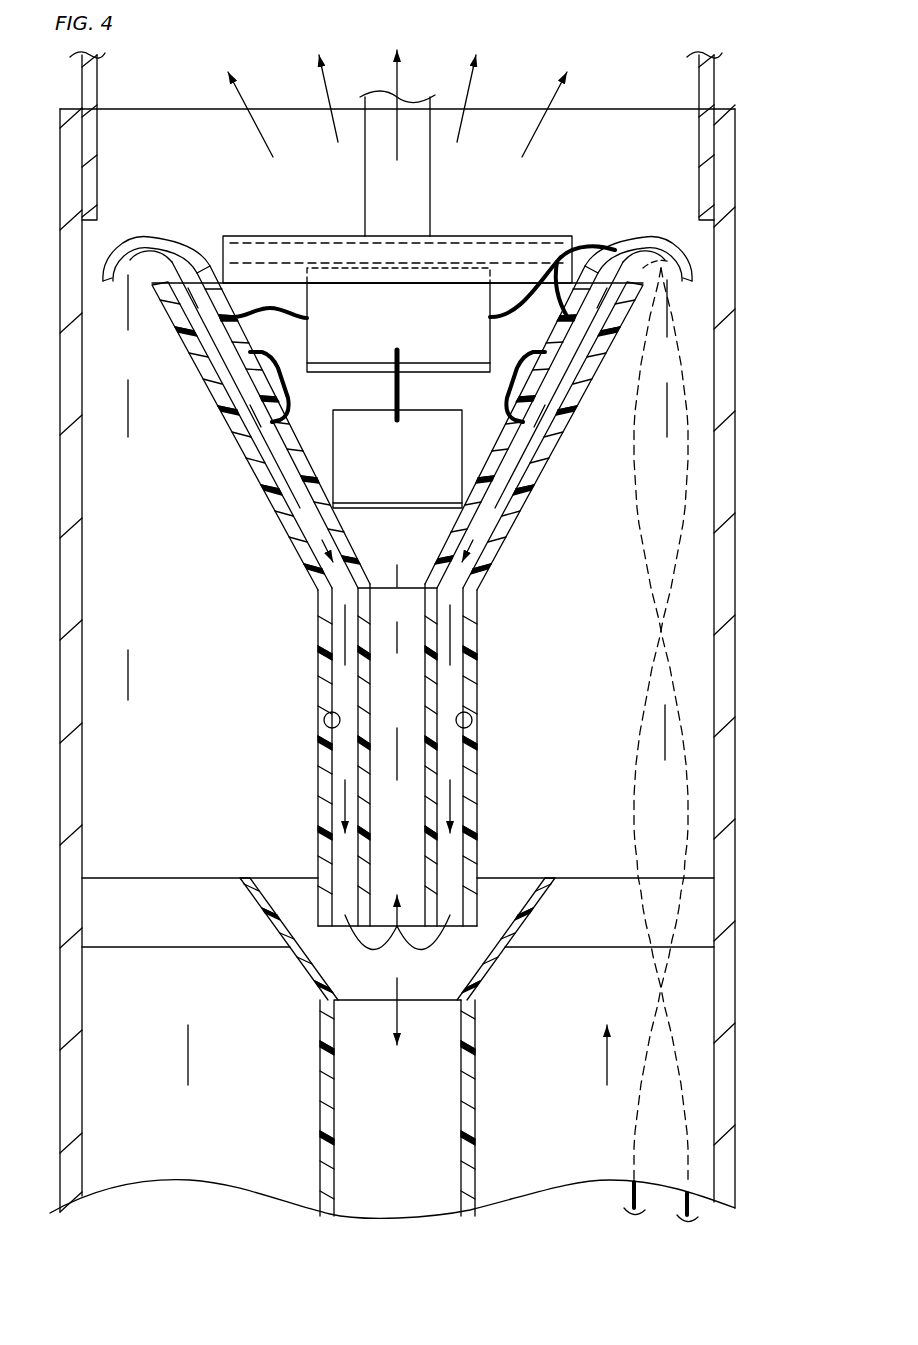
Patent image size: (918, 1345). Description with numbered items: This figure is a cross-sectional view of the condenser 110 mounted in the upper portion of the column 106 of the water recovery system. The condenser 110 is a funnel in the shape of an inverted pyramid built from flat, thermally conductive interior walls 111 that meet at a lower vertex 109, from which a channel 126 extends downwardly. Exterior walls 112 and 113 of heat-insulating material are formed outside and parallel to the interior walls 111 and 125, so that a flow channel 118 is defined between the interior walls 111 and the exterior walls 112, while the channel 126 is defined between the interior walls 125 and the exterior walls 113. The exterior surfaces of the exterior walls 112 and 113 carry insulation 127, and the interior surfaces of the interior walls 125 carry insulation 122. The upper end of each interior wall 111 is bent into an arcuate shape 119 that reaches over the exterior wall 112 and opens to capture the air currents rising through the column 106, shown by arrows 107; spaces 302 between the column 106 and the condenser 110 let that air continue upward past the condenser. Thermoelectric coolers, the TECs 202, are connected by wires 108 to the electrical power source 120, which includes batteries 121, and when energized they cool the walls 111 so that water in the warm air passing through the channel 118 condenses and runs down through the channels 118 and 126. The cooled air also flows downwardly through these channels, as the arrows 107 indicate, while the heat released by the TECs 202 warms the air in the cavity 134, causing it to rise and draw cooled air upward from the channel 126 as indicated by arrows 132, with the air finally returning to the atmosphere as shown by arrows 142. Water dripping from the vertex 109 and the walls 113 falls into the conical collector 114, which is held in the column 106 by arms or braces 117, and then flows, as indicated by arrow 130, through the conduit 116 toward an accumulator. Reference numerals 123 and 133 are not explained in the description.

The column 106 is at (733, 672).
The arrows (air flow) 107 is at (128, 428).
The wires 108 is at (632, 1193).
The vertex 109 is at (315, 585).
The condenser 110 is at (250, 512).
The interior walls 111 is at (303, 457).
The exterior walls 112 is at (272, 473).
The exterior walls 113 is at (338, 718).
The collector 114 is at (293, 893).
The conduit 116 is at (325, 1165).
The arms or braces 117 is at (170, 928).
The flow channel 118 is at (530, 445).
The arcuate shape (arcuate bend) 119 is at (146, 238).
The electrical power source 120 is at (258, 237).
The batteries 121 is at (427, 865).
The insulation 122 is at (430, 742).
The lower tube wall 123 is at (455, 1155).
The interior walls 125 is at (353, 766).
The channel 126 is at (345, 748).
The insulation 127 is at (195, 365).
The arrow (water flow) 130 is at (397, 1015).
The arrows (upward air flow) 132 is at (398, 626).
The tube insulation 133 is at (320, 1086).
The cavity 134 is at (413, 547).
The arrows (air return flow) 142 is at (563, 95).
The TECs (thermoelectric coolers) 202 is at (282, 432).
The spaces 302 is at (703, 282).